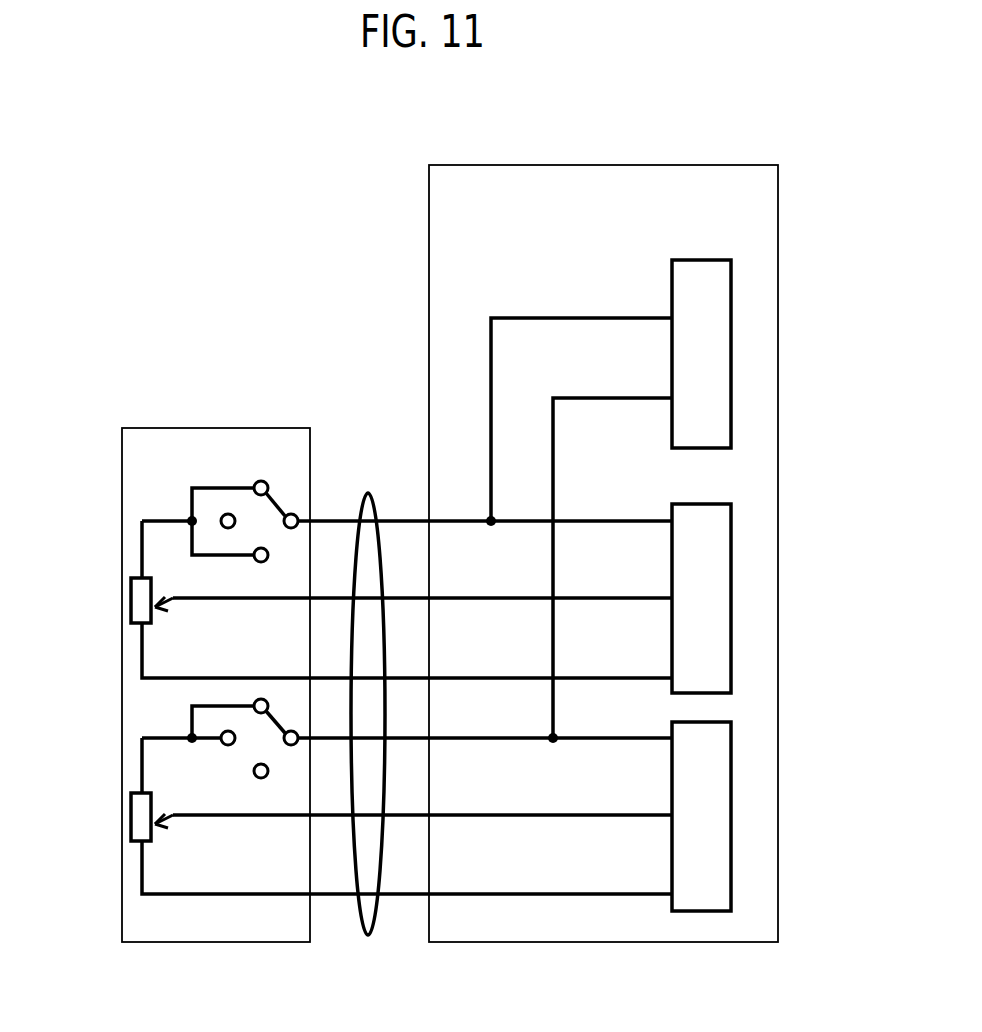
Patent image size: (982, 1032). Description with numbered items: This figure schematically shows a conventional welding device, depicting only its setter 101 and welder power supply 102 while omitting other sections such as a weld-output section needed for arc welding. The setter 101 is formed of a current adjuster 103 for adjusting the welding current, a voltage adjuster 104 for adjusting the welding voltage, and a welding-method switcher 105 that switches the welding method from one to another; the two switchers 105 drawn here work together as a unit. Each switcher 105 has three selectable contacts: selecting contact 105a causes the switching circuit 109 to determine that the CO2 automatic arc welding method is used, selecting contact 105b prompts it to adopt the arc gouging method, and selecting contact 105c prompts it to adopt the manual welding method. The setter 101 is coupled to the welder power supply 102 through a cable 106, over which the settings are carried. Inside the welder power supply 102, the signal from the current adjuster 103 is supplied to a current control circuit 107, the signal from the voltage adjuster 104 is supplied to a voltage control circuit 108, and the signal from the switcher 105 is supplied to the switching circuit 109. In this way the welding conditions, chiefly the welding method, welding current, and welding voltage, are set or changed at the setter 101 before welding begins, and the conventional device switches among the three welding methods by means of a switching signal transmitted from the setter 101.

The setter 101 is at (243, 943).
The welder power supply 102 is at (631, 942).
The current adjuster 103 is at (131, 592).
The voltage adjuster 104 is at (131, 808).
The welding-method switcher 105 is at (203, 478).
The contact 105a is at (263, 480).
The contact 105b is at (229, 514).
The contact 105c is at (266, 550).
The cable 106 is at (365, 942).
The current control circuit 107 is at (732, 615).
The voltage control circuit 108 is at (732, 842).
The switching circuit 109 is at (732, 365).